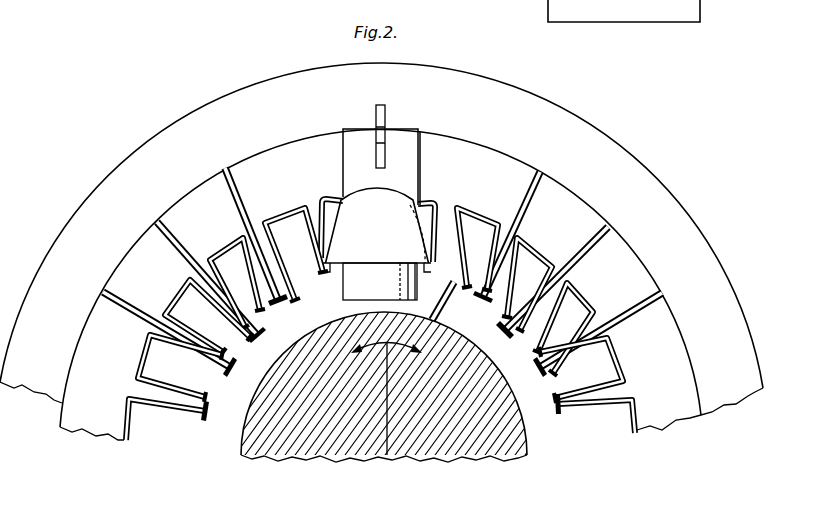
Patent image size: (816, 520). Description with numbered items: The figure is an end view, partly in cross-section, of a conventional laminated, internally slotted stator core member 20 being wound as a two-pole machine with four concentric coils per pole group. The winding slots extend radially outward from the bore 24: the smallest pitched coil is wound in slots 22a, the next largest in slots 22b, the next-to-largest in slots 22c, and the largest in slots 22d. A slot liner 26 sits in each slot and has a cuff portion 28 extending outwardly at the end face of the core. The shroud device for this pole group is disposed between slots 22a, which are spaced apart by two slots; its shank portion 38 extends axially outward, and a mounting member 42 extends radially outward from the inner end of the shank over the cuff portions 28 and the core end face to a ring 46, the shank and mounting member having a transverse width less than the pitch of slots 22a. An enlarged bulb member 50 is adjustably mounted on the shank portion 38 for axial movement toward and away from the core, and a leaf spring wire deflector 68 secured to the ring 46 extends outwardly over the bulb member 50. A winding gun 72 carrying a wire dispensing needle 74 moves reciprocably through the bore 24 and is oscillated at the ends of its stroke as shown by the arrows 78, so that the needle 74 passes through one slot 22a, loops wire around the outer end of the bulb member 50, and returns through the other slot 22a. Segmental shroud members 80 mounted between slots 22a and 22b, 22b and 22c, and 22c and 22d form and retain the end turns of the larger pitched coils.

The stator core member 20 is at (667, 404).
The slots for smallest pitched coil 22a is at (287, 233).
The slots for next largest pitched coil 22b is at (232, 263).
The slots for next-to-largest pitched coil 22c is at (195, 310).
The slots for largest pitched coil 22d is at (165, 360).
The bore 24 is at (540, 432).
The slot liner 26 is at (131, 428).
The cuff portion 28 is at (190, 418).
The shank portion 38 is at (383, 291).
The mounting member 42 is at (419, 167).
The ring 46 is at (641, 165).
The bulb member 50 is at (385, 225).
The leaf spring wire deflector 68 is at (386, 141).
The winding gun 72 is at (325, 460).
The wire dispensing needle 74 is at (446, 306).
The arrows 78 is at (388, 457).
The segmental shroud member 80 is at (598, 249).